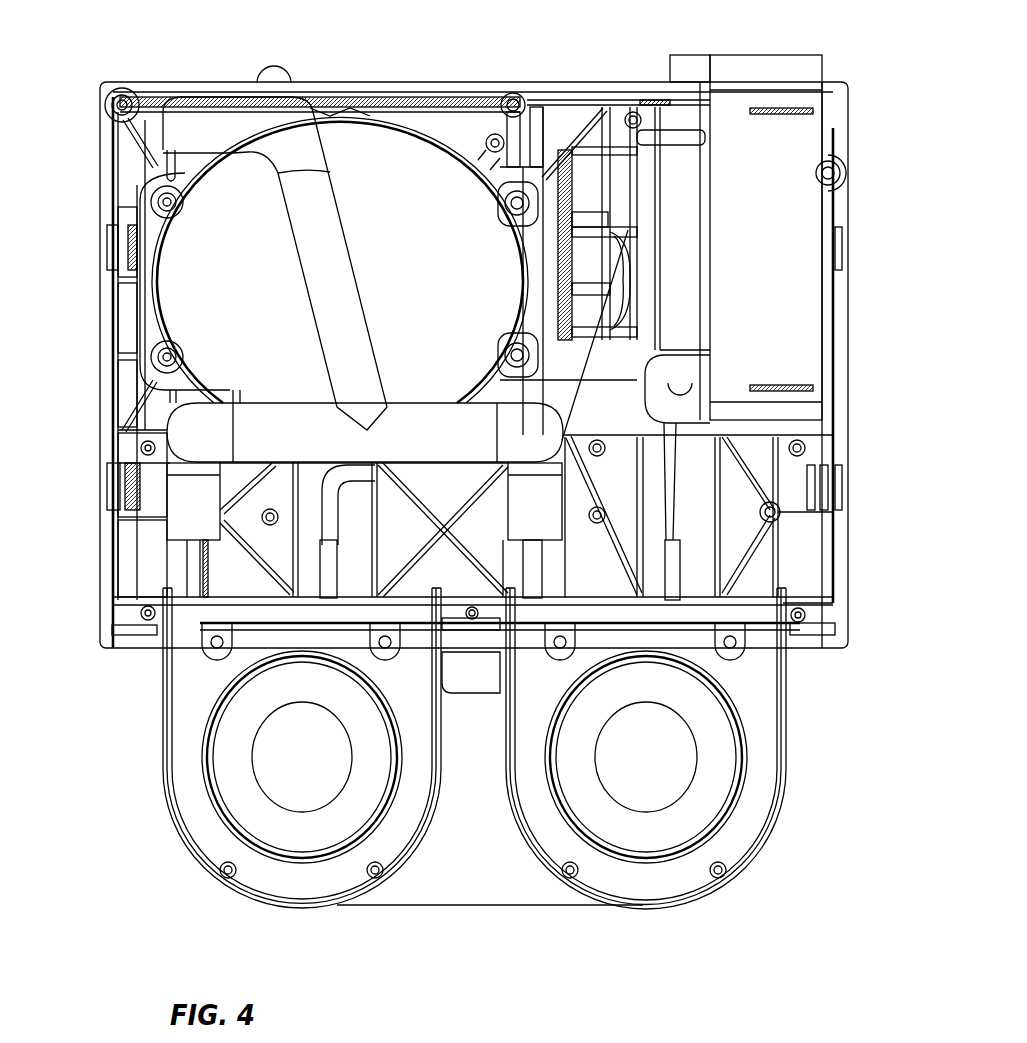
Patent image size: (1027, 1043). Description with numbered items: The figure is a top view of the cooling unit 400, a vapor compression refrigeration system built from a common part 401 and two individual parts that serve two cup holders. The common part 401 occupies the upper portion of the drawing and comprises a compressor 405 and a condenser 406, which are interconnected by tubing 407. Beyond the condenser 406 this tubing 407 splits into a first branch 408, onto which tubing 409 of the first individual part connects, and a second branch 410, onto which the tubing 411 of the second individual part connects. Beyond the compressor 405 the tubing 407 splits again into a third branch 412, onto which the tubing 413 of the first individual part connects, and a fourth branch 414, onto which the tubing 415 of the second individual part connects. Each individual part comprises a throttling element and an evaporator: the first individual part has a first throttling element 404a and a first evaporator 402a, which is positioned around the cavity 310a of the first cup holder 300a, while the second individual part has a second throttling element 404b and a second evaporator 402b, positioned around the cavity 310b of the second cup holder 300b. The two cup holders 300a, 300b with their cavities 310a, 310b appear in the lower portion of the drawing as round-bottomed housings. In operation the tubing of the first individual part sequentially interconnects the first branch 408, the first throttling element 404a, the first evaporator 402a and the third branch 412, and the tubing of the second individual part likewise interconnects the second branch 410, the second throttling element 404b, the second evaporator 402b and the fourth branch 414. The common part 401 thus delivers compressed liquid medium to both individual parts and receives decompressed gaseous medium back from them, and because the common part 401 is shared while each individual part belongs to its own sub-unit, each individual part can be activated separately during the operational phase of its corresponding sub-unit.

The cooling unit 400 is at (100, 211).
The common part 401 is at (441, 365).
The tubing 407 is at (450, 84).
The first throttling element 404a is at (657, 158).
The second throttling element 404b is at (672, 393).
The compressor 405 is at (263, 312).
The condenser 406 is at (769, 256).
The first branch 408 is at (565, 190).
The second branch 410 is at (572, 289).
The tubing of the second individual part 411 is at (673, 485).
The third branch 412 is at (298, 443).
The fourth branch 414 is at (483, 443).
The tubing of the first individual part 413 is at (208, 527).
The tubing of the second individual part 415 is at (548, 510).
The tubing of the first individual part 409 is at (327, 521).
The first cup holder 300a is at (163, 770).
The second cup holder 300b is at (779, 790).
The cavity of the first cup holder 310a is at (330, 766).
The cavity of the second cup holder 310b is at (667, 766).
The first evaporator 402a is at (212, 829).
The second evaporator 402b is at (750, 838).